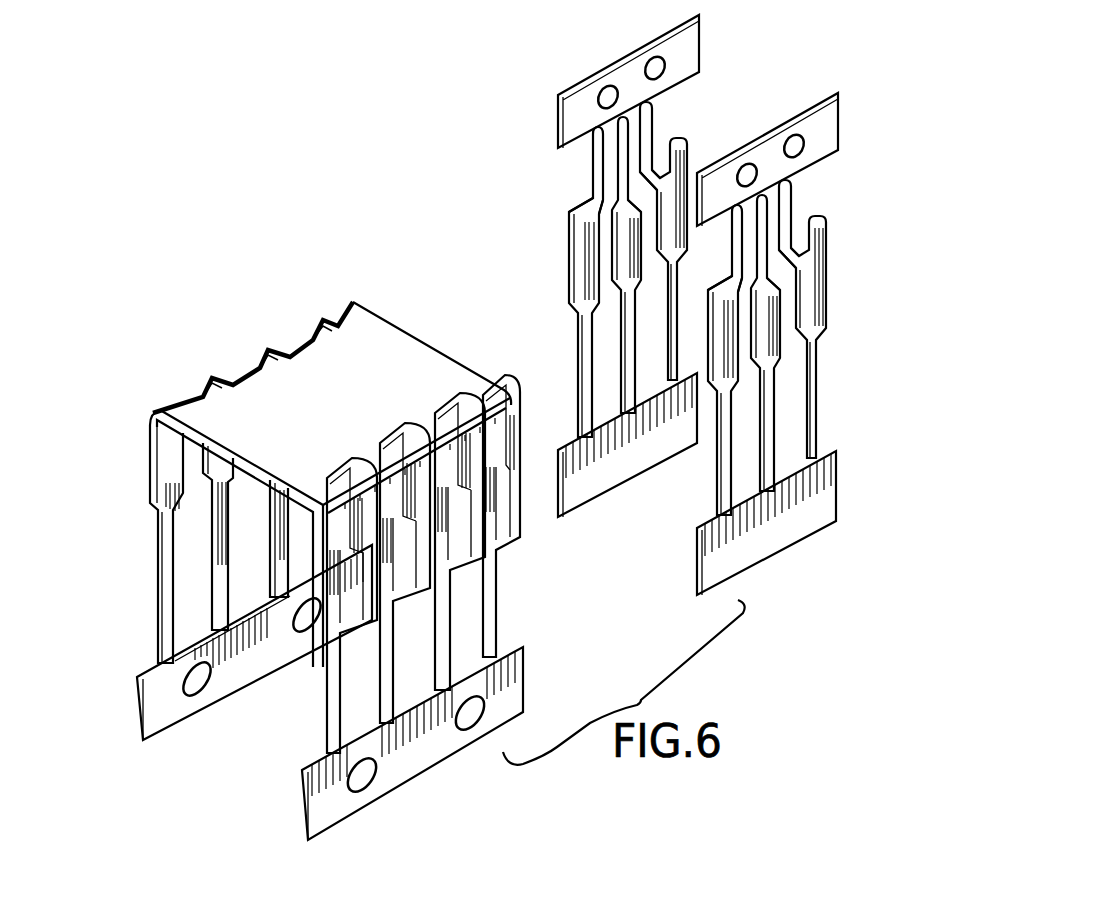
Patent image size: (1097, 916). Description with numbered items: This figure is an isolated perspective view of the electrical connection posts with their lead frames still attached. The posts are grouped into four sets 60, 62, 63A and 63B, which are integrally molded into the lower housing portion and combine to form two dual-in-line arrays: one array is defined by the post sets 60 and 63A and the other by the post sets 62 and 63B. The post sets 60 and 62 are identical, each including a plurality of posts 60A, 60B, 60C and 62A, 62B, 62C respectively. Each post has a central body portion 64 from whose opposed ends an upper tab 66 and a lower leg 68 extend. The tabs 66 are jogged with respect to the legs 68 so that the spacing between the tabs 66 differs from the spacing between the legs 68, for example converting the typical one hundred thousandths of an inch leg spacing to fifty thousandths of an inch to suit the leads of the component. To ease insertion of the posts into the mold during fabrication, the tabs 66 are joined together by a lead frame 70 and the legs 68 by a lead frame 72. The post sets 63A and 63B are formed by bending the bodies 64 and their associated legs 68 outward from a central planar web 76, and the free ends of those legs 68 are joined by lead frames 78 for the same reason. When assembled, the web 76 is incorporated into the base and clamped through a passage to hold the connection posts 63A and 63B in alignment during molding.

The post set 60 is at (659, 221).
The post set 62 is at (808, 285).
The lead frame 70 is at (638, 72).
The lead frame 72 is at (603, 473).
The central body portion 64 is at (165, 483).
The upper tab 66 is at (645, 176).
The lower leg 68 is at (692, 470).
The post 60A is at (578, 332).
The post 60B is at (627, 340).
The post 60C is at (672, 357).
The post 62A is at (722, 440).
The post 62B is at (767, 410).
The post 62C is at (817, 350).
The central planar web 76 is at (341, 408).
The lead frame 78 is at (233, 673).
The post set 63A is at (147, 576).
The post set 63B is at (253, 768).